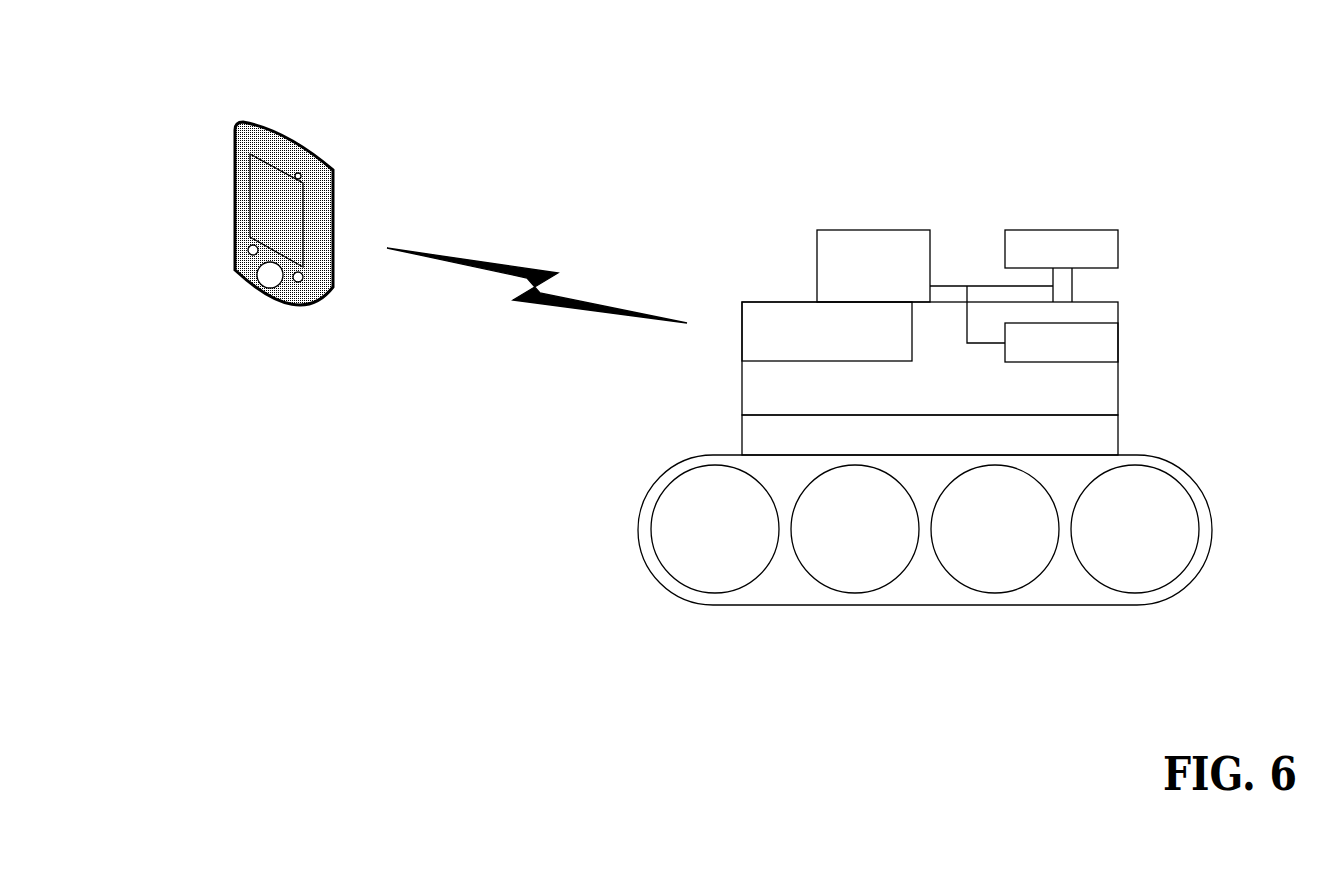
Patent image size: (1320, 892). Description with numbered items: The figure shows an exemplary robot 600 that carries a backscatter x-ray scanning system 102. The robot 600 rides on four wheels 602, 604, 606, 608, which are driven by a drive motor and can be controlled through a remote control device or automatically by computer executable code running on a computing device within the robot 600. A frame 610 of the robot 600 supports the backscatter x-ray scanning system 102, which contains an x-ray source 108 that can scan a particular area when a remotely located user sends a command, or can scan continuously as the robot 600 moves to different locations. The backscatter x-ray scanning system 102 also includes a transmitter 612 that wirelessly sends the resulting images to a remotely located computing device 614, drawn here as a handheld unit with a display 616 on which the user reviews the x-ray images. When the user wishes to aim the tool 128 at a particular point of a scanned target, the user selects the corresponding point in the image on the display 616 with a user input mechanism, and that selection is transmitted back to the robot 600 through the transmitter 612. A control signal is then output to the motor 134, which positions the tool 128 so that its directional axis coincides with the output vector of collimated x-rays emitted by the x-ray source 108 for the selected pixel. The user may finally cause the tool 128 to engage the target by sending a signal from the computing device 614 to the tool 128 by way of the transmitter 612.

The robot 600 is at (700, 146).
The remotely located computing device 614 is at (312, 150).
The display 616 is at (252, 190).
The transmitter 612 is at (762, 302).
The motor 134 is at (893, 230).
The tool 128 is at (1082, 230).
The x-ray source 108 is at (1118, 343).
The backscatter x-ray scanning system 102 is at (1118, 395).
The frame 610 is at (1118, 433).
The wheel 602 is at (703, 593).
The wheel 604 is at (853, 593).
The wheel 606 is at (995, 593).
The wheel 608 is at (1133, 593).